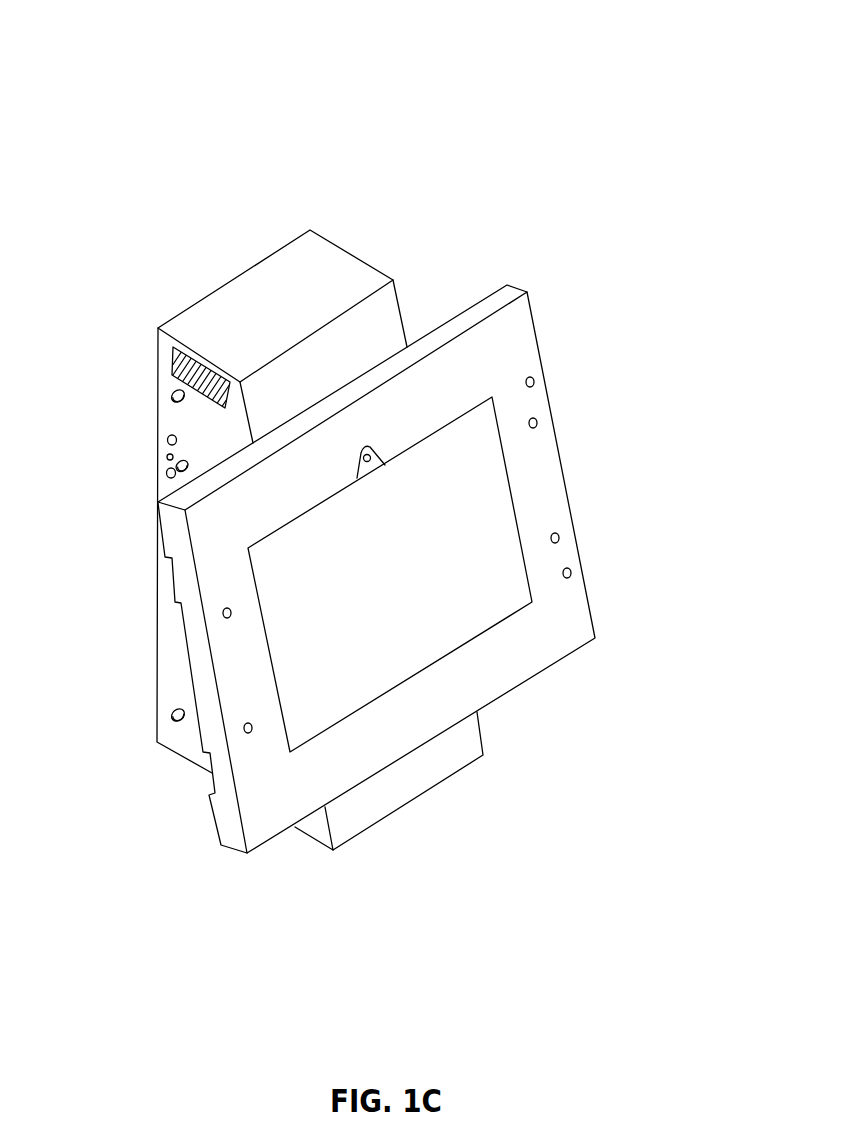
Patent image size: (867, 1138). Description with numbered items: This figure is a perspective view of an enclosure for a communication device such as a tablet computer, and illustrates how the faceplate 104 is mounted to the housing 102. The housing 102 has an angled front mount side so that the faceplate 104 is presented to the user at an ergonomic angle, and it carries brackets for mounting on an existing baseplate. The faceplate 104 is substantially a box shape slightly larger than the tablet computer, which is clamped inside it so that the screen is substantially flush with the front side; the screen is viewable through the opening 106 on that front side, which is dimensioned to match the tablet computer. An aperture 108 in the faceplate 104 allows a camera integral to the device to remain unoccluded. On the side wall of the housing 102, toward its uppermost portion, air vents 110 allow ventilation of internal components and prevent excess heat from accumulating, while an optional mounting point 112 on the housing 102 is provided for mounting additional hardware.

The housing 102 is at (263, 305).
The faceplate 104 is at (242, 667).
The opening 106 is at (462, 533).
The aperture 108 is at (380, 447).
The air vents 110 is at (165, 360).
The optional mounting point 112 is at (157, 462).